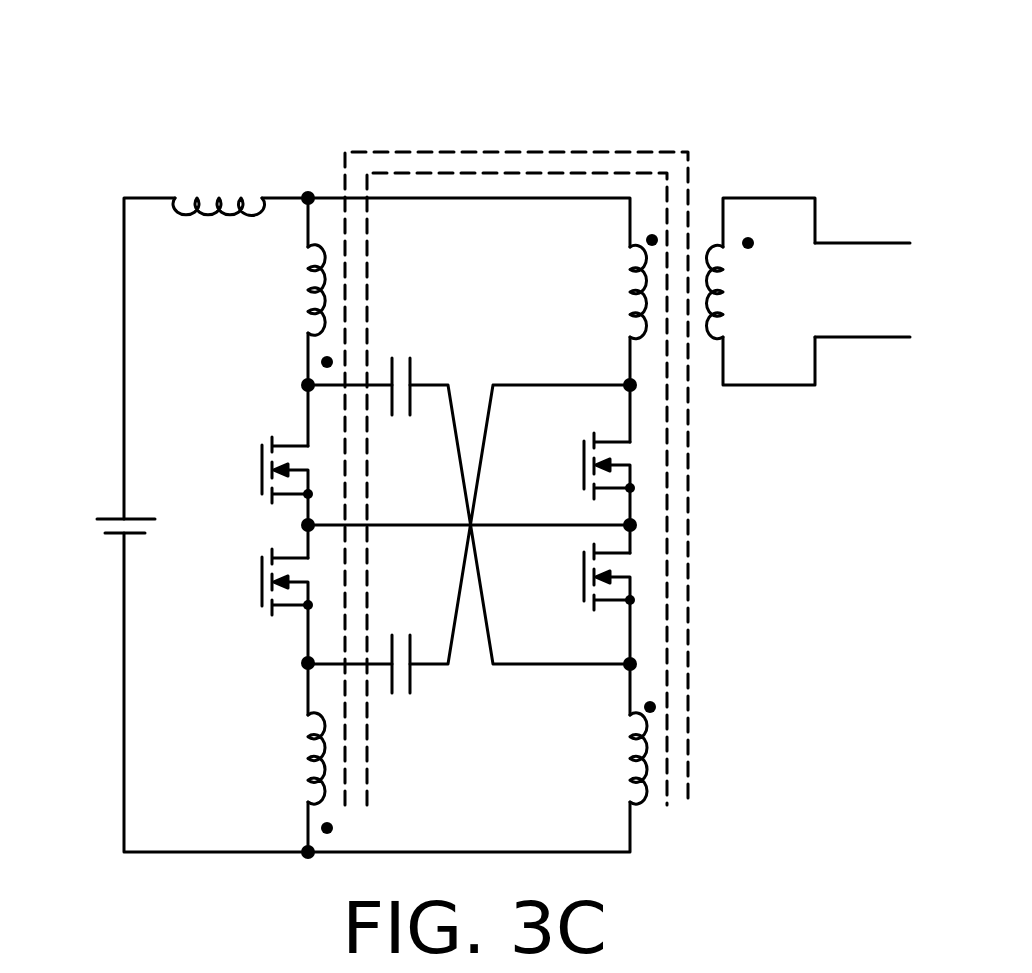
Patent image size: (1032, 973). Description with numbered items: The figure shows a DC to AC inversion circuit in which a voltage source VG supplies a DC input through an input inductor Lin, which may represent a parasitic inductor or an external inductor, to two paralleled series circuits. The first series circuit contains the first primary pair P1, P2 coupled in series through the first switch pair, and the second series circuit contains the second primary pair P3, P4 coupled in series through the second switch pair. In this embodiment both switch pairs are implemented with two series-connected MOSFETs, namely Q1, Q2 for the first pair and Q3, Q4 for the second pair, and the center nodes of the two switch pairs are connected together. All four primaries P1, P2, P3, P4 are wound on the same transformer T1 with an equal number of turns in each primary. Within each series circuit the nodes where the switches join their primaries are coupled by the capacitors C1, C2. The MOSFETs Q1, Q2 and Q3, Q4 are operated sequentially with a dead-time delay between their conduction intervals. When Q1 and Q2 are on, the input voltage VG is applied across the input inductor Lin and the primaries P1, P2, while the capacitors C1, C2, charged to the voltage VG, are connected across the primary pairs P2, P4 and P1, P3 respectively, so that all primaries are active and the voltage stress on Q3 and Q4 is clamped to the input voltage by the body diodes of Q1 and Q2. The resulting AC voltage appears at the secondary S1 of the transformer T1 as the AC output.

The voltage source VG is at (93, 524).
The input inductor Lin is at (218, 171).
The primary P1 is at (615, 286).
The primary P2 is at (614, 752).
The primary P3 is at (291, 306).
The primary P4 is at (289, 773).
The capacitor C1 is at (406, 355).
The capacitor C2 is at (405, 694).
The MOSFET Q1 is at (578, 577).
The MOSFET Q2 is at (578, 466).
The MOSFET Q3 is at (256, 582).
The MOSFET Q4 is at (256, 470).
The transformer T1 is at (522, 445).
The secondary S1 is at (760, 291).
The AC output AC is at (862, 290).